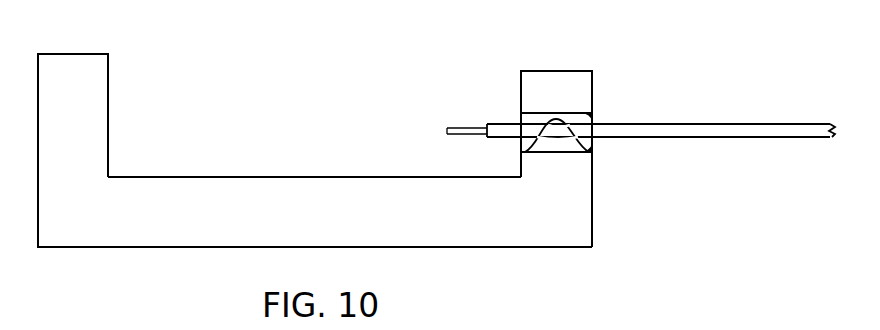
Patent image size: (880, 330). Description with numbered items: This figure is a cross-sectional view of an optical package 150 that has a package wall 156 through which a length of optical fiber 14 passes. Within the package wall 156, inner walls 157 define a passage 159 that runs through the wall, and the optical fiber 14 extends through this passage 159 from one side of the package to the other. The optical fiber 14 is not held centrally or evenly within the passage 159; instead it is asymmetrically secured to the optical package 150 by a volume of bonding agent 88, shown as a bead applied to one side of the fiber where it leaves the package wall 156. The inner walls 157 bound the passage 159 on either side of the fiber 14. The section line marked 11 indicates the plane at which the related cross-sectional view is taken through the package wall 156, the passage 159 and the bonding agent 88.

The optical fiber 14 is at (710, 130).
The bonding agent 88 is at (545, 141).
The optical package 150 is at (197, 256).
The package wall 156 is at (568, 210).
The inner walls 157 is at (592, 117).
The passage 159 is at (521, 118).
The section line 11- 11 is at (598, 44).